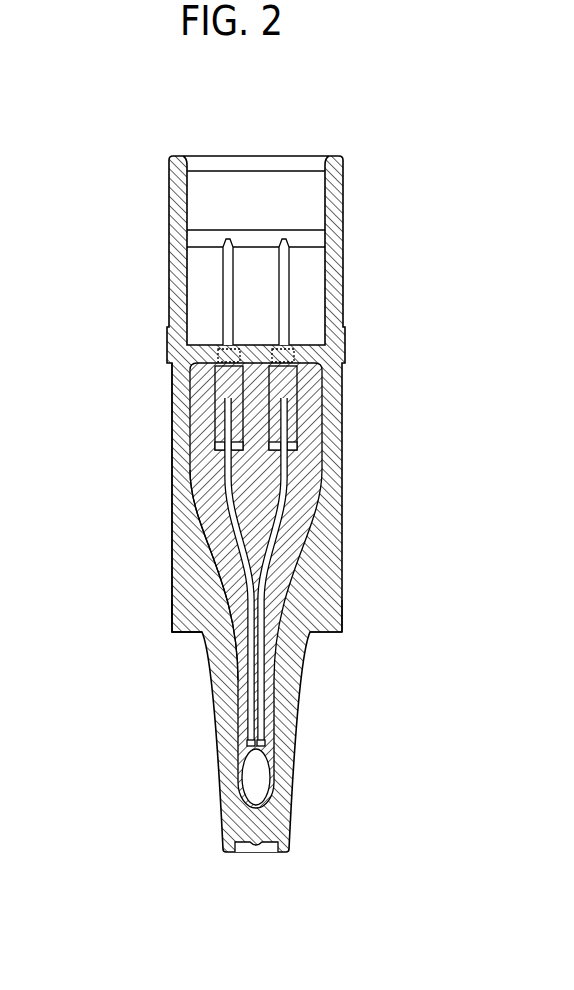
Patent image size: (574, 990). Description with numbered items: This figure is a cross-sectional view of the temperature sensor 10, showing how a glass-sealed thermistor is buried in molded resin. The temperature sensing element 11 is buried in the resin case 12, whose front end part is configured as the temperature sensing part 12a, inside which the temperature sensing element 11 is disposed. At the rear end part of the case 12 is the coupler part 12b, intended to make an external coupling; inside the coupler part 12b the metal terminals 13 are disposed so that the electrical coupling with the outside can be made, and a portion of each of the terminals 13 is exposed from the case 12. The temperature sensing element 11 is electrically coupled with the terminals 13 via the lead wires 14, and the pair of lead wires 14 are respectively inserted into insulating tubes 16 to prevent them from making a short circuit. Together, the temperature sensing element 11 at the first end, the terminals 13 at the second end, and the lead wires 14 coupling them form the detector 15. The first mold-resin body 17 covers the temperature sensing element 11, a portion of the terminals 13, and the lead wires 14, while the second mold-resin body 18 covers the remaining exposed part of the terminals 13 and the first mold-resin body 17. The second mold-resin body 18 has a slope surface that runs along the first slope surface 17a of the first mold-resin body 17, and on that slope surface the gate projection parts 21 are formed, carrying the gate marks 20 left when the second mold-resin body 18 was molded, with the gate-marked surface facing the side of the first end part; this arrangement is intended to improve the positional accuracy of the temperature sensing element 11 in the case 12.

The temperature sensor 10 is at (103, 190).
The temperature sensing element 11 is at (252, 780).
The case 12 is at (97, 430).
The temperature sensing part 12a is at (209, 725).
The coupler part 12b is at (156, 167).
The terminals 13 is at (227, 318).
The lead wires 14 is at (262, 405).
The detector 15 is at (420, 732).
The insulating tubes 16 is at (214, 656).
The first mold-resin body 17 is at (172, 455).
The first slope surface 17a is at (212, 592).
The second mold-resin body 18 is at (172, 520).
The gate marks 20 is at (187, 633).
The gate projection parts 21 is at (172, 625).